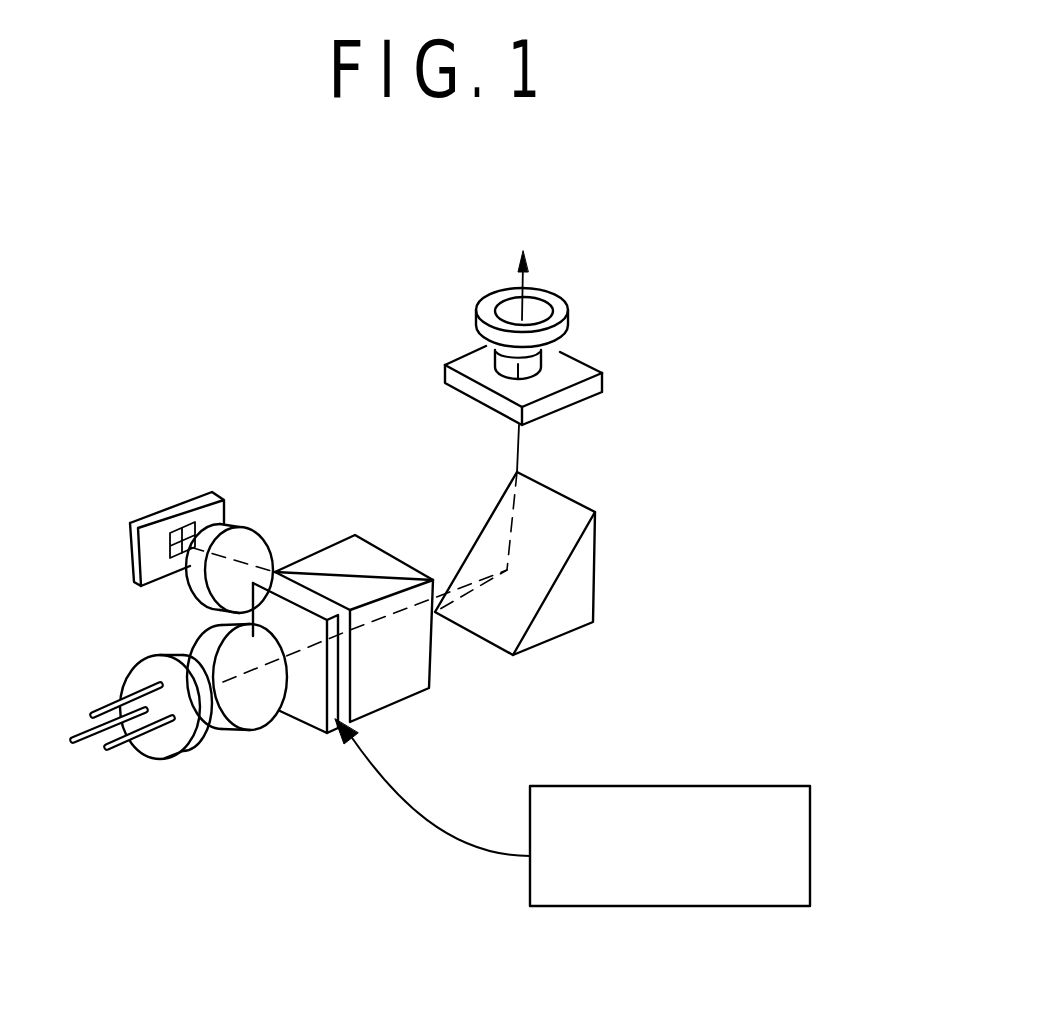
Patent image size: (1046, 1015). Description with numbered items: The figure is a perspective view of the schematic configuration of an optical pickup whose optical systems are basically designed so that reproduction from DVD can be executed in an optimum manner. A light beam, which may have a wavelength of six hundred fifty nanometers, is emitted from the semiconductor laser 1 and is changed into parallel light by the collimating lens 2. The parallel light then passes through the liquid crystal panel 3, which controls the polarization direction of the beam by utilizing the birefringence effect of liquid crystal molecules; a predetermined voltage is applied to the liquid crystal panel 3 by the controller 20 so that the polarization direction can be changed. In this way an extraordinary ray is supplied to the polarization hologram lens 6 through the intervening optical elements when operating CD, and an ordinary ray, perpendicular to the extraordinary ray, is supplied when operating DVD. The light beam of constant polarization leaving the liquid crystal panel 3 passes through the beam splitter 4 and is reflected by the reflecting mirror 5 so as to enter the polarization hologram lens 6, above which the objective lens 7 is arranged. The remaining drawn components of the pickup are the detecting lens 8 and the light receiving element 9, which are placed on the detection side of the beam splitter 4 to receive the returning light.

The semiconductor laser 1 is at (168, 758).
The collimating lens 2 is at (272, 720).
The liquid crystal panel 3 is at (328, 735).
The beam splitter 4 is at (408, 701).
The reflecting mirror 5 is at (535, 645).
The polarization hologram lens 6 is at (593, 392).
The objective lens 7 is at (571, 322).
The detecting lens 8 is at (240, 525).
The light receiving element 9 is at (223, 498).
The controller 20 is at (813, 843).